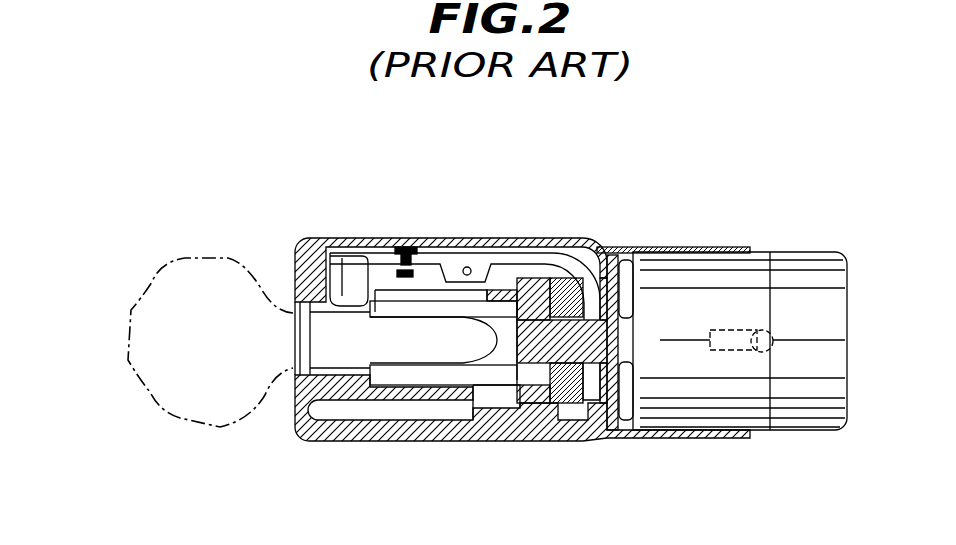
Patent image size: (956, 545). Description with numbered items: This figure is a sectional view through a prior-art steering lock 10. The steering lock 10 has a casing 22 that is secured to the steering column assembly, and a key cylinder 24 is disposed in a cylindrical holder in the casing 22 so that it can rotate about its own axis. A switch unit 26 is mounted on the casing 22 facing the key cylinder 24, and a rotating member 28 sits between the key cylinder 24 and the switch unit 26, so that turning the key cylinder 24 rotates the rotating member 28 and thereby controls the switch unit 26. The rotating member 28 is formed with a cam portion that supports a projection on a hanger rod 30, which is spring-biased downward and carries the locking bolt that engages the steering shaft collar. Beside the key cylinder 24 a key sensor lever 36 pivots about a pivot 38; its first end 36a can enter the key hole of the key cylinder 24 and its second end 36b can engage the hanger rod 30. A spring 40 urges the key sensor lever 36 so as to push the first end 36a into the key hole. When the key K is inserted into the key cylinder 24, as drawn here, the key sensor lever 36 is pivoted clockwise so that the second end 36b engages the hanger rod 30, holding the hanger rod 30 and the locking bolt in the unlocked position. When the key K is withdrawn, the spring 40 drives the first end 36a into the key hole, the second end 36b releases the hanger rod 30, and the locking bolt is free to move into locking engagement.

The steering lock 10 is at (630, 453).
The casing 22 is at (492, 442).
The key cylinder 24 is at (441, 310).
The switch unit 26 is at (712, 268).
The rotating member 28 is at (534, 250).
The hanger rod 30 is at (566, 250).
The key sensor lever 36 is at (427, 262).
The first end 36a is at (343, 242).
The second end 36b is at (590, 257).
The pivot 38 is at (470, 266).
The spring 40 is at (402, 245).
The key K is at (208, 256).